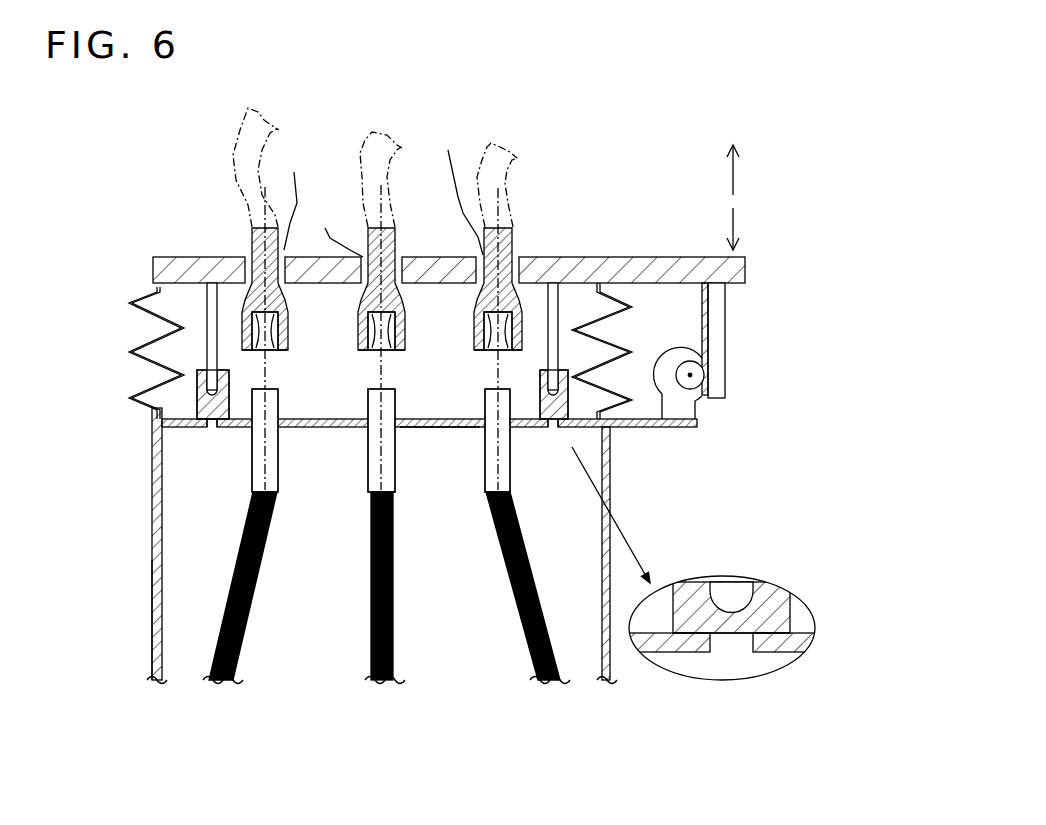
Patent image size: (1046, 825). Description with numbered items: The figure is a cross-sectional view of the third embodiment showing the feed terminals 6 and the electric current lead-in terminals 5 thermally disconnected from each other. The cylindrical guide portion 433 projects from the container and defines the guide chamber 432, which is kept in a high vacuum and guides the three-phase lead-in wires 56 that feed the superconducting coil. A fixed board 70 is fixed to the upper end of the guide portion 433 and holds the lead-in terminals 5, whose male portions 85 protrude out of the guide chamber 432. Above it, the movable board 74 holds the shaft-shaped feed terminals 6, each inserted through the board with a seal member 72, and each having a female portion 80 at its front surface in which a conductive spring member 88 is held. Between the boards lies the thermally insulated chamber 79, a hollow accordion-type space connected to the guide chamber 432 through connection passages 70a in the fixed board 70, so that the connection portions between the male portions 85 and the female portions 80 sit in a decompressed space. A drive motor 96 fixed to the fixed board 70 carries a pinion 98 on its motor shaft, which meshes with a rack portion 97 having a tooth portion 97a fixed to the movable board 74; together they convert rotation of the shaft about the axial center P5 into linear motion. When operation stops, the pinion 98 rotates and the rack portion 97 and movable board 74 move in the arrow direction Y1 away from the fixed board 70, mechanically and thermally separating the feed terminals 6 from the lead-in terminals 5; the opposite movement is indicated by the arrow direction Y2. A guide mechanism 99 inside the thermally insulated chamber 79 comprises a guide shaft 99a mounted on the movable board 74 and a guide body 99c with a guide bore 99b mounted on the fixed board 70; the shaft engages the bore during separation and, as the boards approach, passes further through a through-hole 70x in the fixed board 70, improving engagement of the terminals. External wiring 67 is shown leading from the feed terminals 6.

The electric current lead-in terminal 5 is at (359, 468).
The feed terminal 6 is at (379, 331).
The electric current lead-in wire 56 is at (386, 588).
The external wiring 67 is at (393, 153).
The fixed board 70 is at (438, 567).
The connection passage 70a is at (440, 471).
The through-hole 70x is at (500, 578).
The seal member 72 is at (381, 190).
The movable board 74 is at (442, 234).
The thermally insulated chamber 79 is at (334, 405).
The female portion 80 is at (393, 351).
The male portion 85 is at (399, 436).
The spring member 88 is at (382, 325).
The drive motor 96 is at (681, 414).
The rack portion 97 is at (773, 339).
The tooth portion 97a is at (760, 339).
The pinion 98 is at (731, 402).
The guide mechanism 99 is at (205, 360).
The guide shaft 99a is at (409, 435).
The guide bore 99b is at (424, 581).
The guide body 99c is at (472, 501).
The guide chamber 432 is at (135, 546).
The guide portion 433 is at (95, 620).
The axial center of the pinion P5 is at (759, 378).
The arrow direction Y1 is at (763, 170).
The direction Y2 is at (763, 228).